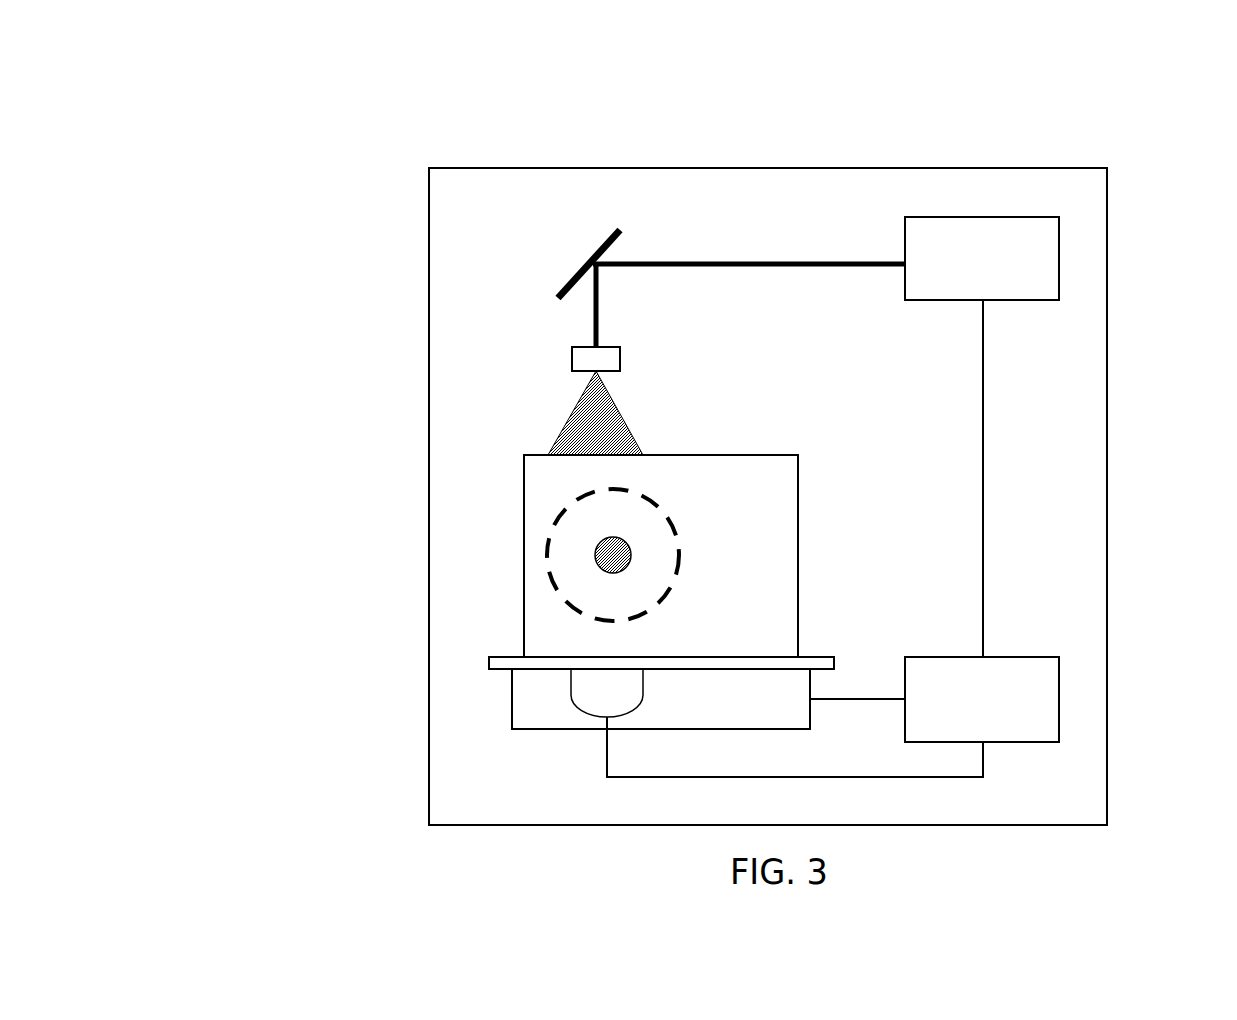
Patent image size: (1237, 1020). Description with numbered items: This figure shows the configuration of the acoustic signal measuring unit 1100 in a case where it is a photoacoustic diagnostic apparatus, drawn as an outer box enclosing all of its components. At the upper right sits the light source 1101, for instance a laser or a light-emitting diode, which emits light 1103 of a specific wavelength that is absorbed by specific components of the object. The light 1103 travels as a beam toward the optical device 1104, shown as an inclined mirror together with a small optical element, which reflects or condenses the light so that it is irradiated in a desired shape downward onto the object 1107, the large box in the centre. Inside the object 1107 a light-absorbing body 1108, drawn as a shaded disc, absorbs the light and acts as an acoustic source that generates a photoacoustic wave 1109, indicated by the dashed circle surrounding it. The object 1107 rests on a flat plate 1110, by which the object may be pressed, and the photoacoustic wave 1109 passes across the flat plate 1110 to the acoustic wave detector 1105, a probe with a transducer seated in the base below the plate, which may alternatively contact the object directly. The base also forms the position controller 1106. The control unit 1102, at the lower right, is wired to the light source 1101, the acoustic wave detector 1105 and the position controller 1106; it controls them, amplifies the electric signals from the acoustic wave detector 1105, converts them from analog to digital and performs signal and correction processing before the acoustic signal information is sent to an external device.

The acoustic signal measuring unit 1100 is at (429, 497).
The light source 1101 is at (1060, 258).
The control unit 1102 is at (1060, 700).
The light 1103 is at (623, 405).
The optical device 1104 is at (572, 357).
The acoustic wave detector 1105 is at (570, 694).
The position controller 1106 is at (662, 730).
The object 1107 is at (524, 557).
The light-absorbing body 1108 is at (600, 573).
The photoacoustic wave 1109 is at (568, 605).
The flat plate 1110 is at (489, 662).